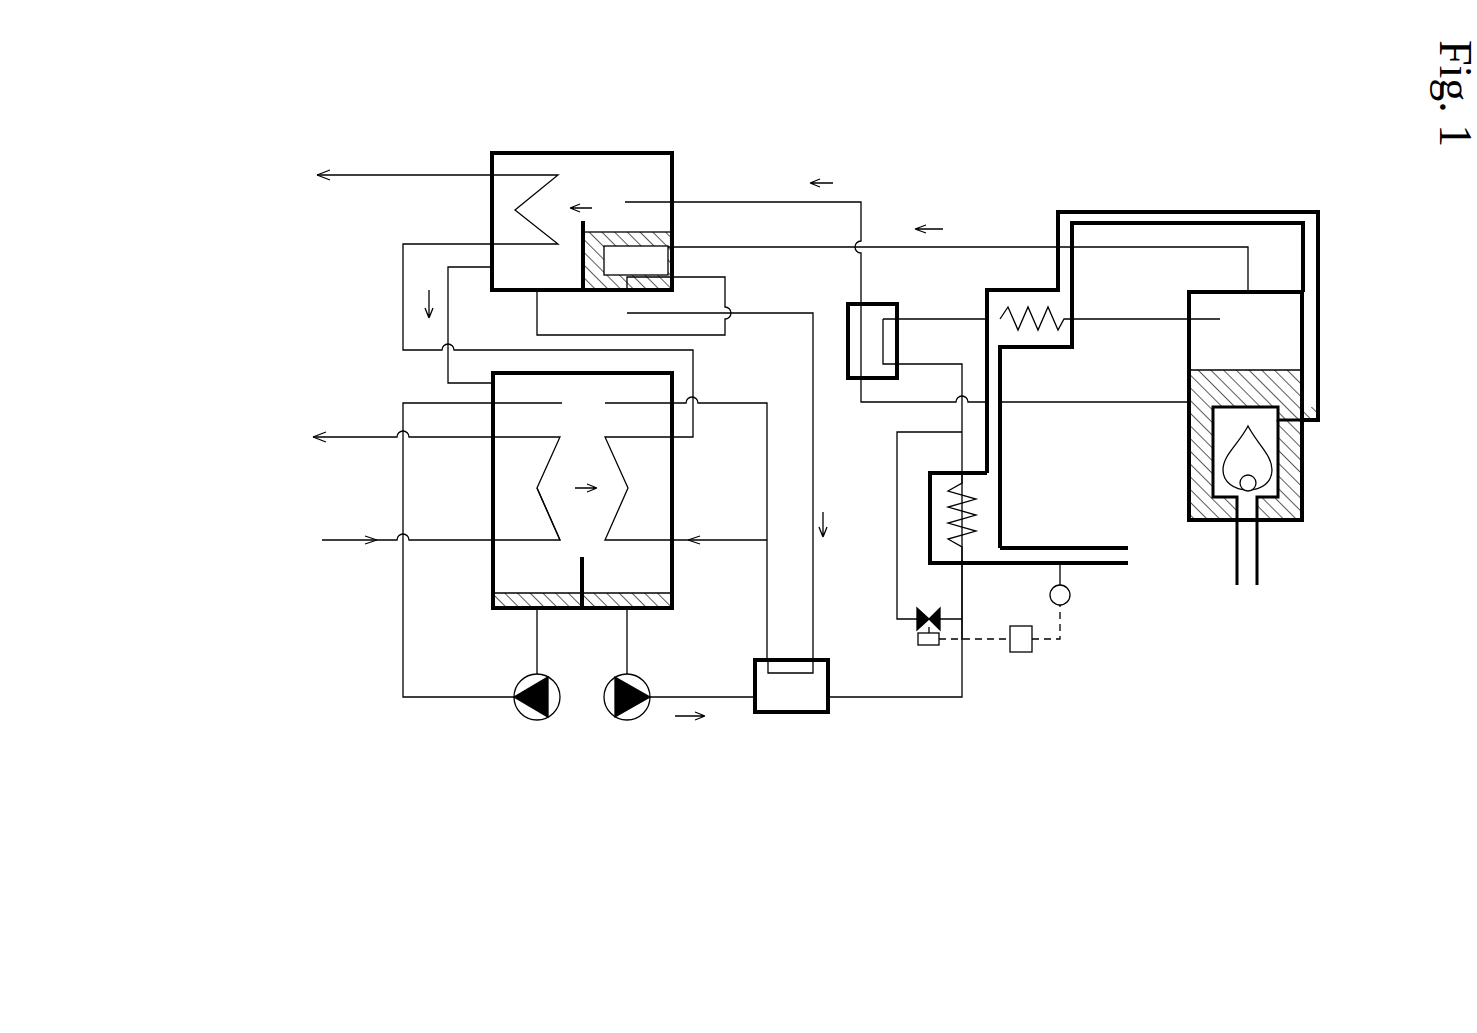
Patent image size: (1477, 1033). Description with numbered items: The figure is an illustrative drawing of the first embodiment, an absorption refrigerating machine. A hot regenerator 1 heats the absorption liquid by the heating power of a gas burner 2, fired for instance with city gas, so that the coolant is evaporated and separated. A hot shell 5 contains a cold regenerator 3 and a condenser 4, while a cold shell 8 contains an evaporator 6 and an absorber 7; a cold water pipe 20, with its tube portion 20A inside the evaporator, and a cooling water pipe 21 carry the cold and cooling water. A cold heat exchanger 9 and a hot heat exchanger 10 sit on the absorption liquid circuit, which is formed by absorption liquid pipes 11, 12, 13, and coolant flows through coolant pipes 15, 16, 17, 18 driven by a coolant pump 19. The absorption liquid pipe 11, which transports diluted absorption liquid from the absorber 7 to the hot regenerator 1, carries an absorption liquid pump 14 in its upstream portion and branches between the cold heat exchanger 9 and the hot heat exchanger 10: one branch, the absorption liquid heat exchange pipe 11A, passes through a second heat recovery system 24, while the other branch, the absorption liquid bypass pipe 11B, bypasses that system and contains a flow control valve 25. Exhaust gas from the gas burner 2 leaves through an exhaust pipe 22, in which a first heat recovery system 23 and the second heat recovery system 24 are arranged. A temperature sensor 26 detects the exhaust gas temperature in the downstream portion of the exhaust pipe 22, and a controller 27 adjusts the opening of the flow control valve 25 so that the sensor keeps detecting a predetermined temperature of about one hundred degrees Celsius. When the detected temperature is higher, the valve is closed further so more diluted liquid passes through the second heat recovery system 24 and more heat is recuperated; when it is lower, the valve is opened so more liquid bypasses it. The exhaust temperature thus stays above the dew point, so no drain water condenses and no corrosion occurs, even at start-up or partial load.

The hot regenerator 1 is at (1305, 452).
The gas burner 2 is at (1272, 488).
The cold regenerator 3 is at (662, 172).
The condenser 4 is at (495, 207).
The hot shell 5 is at (594, 152).
The evaporator 6 is at (505, 468).
The absorber 7 is at (657, 470).
The cold shell 8 is at (490, 567).
The cold heat exchanger 9 is at (788, 712).
The hot heat exchanger 10 is at (848, 310).
The absorption liquid pipe 11 is at (900, 700).
The absorption liquid heat exchange pipe 11A is at (962, 590).
The absorption liquid bypass pipe 11B is at (897, 540).
The absorption liquid pipe 12 is at (1085, 403).
The absorption liquid pipe 13 is at (815, 455).
The absorption liquid pump 14 is at (627, 720).
The coolant pipe 15 is at (985, 247).
The coolant pipe 16 is at (718, 336).
The coolant pipe 17 is at (448, 312).
The coolant pipe 18 is at (403, 666).
The coolant pump 19 is at (530, 720).
The cold water pipe 20 is at (345, 545).
The cold water tube in evaporator 20A is at (545, 510).
The cooling water pipe 21 is at (715, 545).
The exhaust pipe 22 is at (1143, 210).
The first heat recovery system 23 is at (1050, 348).
The second heat recovery system 24 is at (1000, 515).
The flow control valve 25 is at (918, 642).
The temperature sensor 26 is at (1071, 597).
The controller 27 is at (1025, 653).